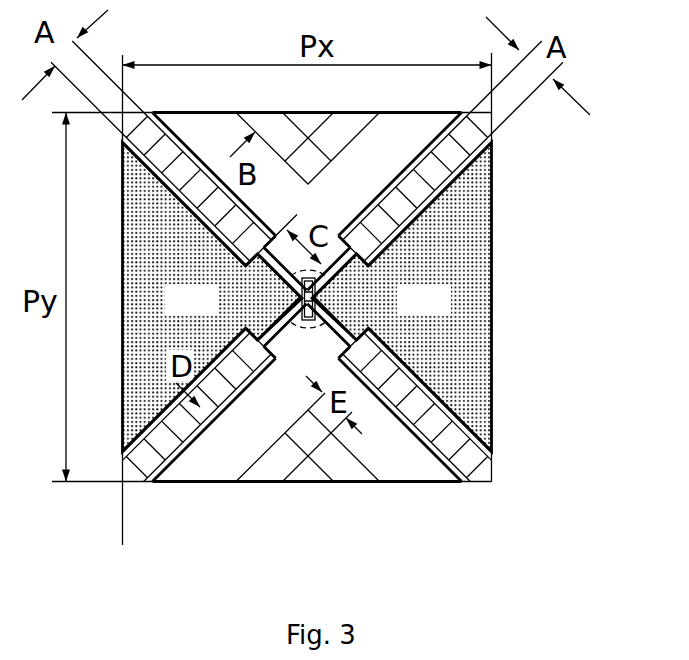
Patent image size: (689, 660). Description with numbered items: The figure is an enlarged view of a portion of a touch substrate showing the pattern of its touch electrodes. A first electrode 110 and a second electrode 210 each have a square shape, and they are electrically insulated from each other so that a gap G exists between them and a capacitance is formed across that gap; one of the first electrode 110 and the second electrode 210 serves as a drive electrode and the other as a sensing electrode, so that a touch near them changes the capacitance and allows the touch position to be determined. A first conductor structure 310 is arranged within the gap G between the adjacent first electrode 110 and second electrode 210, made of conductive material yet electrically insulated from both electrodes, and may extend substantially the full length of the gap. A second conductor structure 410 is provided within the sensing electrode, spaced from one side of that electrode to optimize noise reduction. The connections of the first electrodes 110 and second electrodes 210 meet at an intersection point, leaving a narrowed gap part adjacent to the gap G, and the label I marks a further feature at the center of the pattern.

The first electrode 110 is at (307, 297).
The second electrode 210 is at (314, 274).
The first conductor structure 310 is at (493, 453).
The second conductor structure 410 is at (323, 482).
The gap G is at (464, 170).
The isolation element I is at (318, 327).